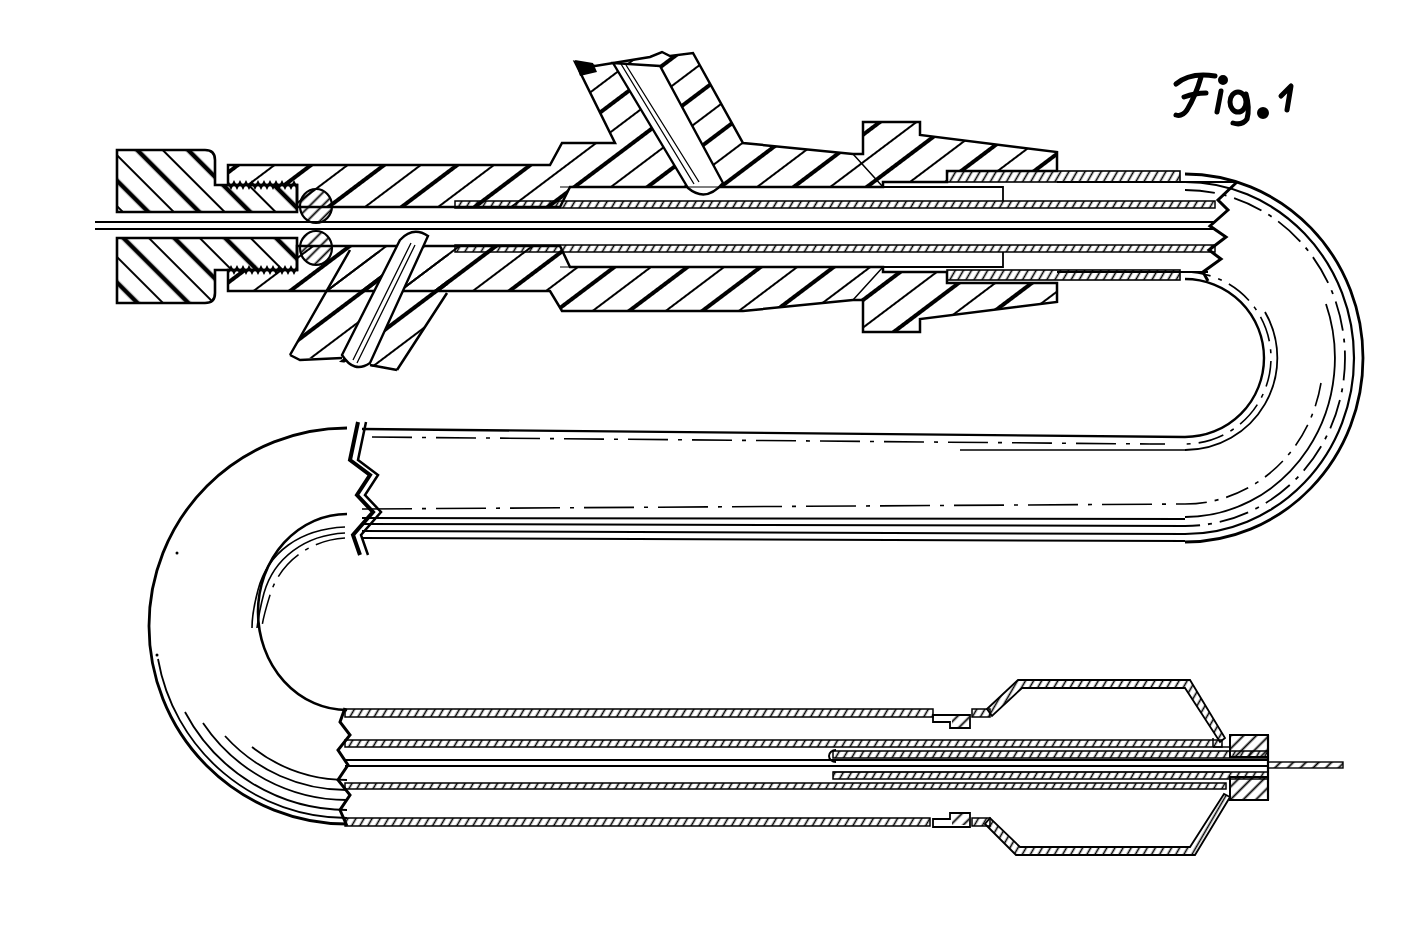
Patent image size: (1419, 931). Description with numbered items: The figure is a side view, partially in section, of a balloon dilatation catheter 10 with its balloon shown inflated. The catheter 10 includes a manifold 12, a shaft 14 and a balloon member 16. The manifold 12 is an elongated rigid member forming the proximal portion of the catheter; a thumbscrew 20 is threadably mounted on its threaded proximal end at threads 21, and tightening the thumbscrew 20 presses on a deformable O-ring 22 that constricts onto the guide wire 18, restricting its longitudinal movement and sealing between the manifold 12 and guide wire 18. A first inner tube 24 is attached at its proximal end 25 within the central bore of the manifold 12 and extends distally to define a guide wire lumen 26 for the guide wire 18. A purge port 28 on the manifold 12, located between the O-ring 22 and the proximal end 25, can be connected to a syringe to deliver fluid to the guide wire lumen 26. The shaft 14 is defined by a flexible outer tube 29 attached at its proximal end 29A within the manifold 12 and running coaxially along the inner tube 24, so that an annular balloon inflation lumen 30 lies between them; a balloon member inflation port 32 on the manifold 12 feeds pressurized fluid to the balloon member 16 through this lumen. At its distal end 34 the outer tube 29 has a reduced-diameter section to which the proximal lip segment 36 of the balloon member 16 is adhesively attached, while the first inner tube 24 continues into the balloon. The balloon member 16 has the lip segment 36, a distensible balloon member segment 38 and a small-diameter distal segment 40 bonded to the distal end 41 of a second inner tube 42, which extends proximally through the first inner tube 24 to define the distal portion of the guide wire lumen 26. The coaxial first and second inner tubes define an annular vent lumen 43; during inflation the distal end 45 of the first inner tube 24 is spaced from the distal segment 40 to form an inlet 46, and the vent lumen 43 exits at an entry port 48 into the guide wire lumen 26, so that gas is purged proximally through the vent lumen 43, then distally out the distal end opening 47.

The catheter 10 is at (1377, 308).
The manifold 12 is at (287, 140).
The shaft 14 is at (977, 425).
The balloon member 16 is at (1125, 682).
The guide wire 18 is at (386, 228).
The thumbscrew 20 is at (158, 147).
The threads 21 is at (258, 274).
The O-ring 22 is at (330, 190).
The first inner tube 24 is at (785, 258).
The proximal end 25 is at (497, 200).
The guide wire lumen 26 is at (735, 236).
The purge port 28 is at (353, 363).
The outer tube 29 is at (1165, 443).
The proximal end 29A is at (1020, 171).
The balloon inflation lumen 30 is at (401, 718).
The balloon member inflation port 32 is at (637, 64).
The distal end 34 is at (953, 714).
The proximal lip segment 36 is at (955, 829).
The distensible balloon member segment 38 is at (1113, 857).
The distal segment 40 is at (1240, 803).
The distal end 41 is at (1276, 745).
The second inner tube 42 is at (862, 781).
The vent lumen 43 is at (896, 748).
The distal end 45 is at (1208, 744).
The inlet 46 is at (1239, 742).
The distal end opening 47 is at (1273, 762).
The entry port 48 is at (822, 750).